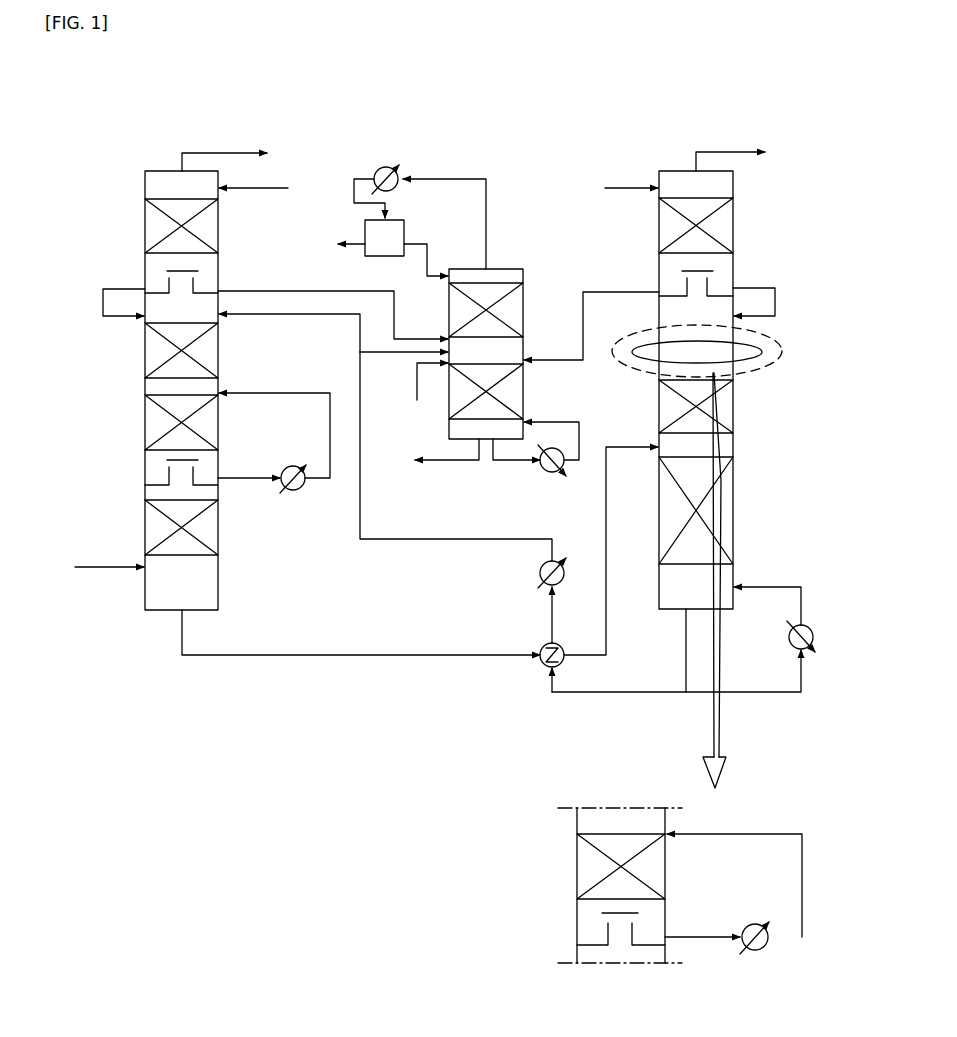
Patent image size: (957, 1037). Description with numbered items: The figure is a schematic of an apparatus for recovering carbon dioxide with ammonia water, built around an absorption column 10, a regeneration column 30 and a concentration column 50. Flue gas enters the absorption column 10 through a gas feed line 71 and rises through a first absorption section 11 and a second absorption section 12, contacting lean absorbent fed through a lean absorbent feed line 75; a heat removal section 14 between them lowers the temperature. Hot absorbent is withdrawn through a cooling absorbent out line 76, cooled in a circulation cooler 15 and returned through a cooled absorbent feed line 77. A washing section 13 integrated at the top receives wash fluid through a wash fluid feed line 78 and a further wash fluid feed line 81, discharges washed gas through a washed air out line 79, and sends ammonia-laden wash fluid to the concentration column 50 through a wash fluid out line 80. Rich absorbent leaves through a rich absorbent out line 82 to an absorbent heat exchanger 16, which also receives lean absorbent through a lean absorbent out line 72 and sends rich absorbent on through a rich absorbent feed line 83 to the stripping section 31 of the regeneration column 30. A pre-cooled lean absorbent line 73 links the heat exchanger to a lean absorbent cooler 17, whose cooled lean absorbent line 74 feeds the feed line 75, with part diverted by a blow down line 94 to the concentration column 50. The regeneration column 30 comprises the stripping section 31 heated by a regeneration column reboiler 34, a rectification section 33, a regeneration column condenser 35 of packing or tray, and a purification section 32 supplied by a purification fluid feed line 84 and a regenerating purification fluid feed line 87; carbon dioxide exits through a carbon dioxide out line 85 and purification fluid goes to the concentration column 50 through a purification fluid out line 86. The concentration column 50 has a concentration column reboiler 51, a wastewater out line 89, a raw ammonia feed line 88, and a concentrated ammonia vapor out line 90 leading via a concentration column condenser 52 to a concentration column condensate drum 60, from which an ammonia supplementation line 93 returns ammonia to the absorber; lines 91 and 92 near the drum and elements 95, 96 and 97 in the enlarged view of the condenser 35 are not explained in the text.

The absorption column 10 is at (143, 350).
The first absorption section 11 is at (150, 528).
The second absorption section 12 is at (150, 352).
The washing section 13 is at (145, 225).
The heat removal section 14 is at (150, 426).
The circulation cooler 15 is at (300, 492).
The absorbent heat exchanger 16 is at (541, 665).
The lean absorbent cooler 17 is at (540, 573).
The regeneration column 30 is at (745, 365).
The stripping section 31 is at (735, 512).
The purification section 32 is at (735, 226).
The rectification section 33 is at (735, 406).
The regeneration column reboiler 34 is at (812, 628).
The regeneration column condenser 35 is at (784, 352).
The concentration column 50 is at (510, 252).
The concentration column reboiler 51 is at (556, 475).
The concentration column condenser 52 is at (382, 167).
The concentration column condensate drum 60 is at (407, 216).
The gas feed line 71 is at (98, 572).
The lean absorbent out line 72 is at (620, 694).
The pre-cooled lean absorbent line 73 is at (550, 626).
The cooled lean absorbent line 74 is at (410, 541).
The lean absorbent feed line 75 is at (282, 318).
The cooling absorbent out line 76 is at (257, 482).
The cooled absorbent feed line 77 is at (298, 396).
The wash fluid feed line 78 is at (253, 192).
The washed air out line 79 is at (232, 150).
The wash fluid out line 80 is at (300, 290).
The wash fluid feed line 81 is at (103, 300).
The rich absorbent out line 82 is at (290, 658).
The rich absorbent feed line 83 is at (607, 640).
The purification fluid feed line 84 is at (626, 186).
The carbon dioxide out line 85 is at (722, 150).
The purification fluid out line 86 is at (620, 290).
The regenerating purification fluid feed line 87 is at (778, 298).
The raw ammonia feed line 88 is at (416, 403).
The wastewater out line 89 is at (447, 463).
The concentrated ammonia vapor out line 90 is at (488, 190).
The condensed stream line 91 is at (353, 183).
The liquid return line 92 is at (423, 241).
The ammonia supplementation line 93 is at (356, 240).
The blow down line 94 is at (386, 356).
The draw line 95 is at (707, 941).
The return line 96 is at (757, 836).
The heat exchanger 97 is at (762, 952).